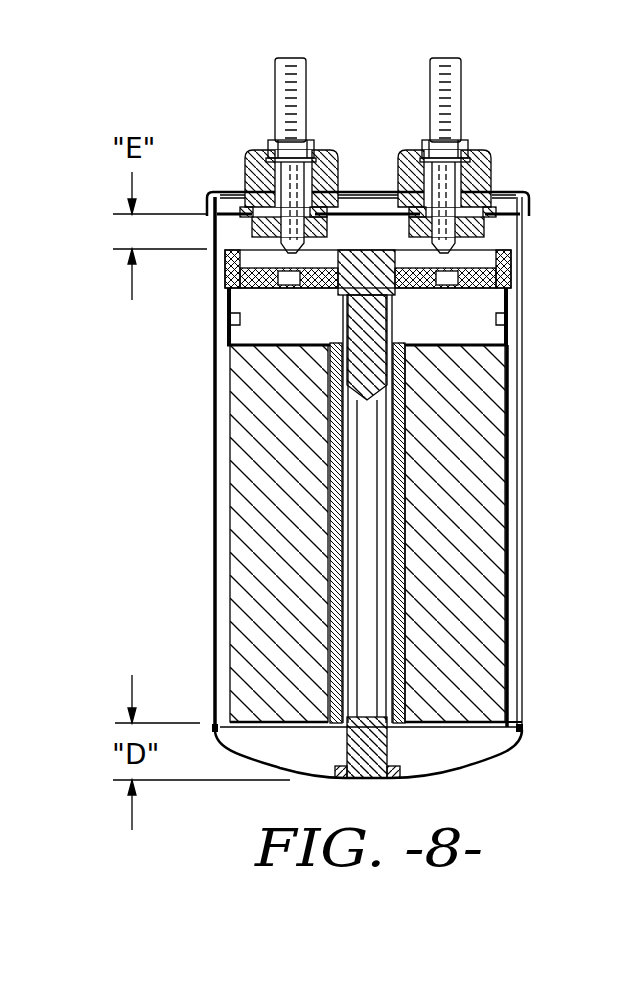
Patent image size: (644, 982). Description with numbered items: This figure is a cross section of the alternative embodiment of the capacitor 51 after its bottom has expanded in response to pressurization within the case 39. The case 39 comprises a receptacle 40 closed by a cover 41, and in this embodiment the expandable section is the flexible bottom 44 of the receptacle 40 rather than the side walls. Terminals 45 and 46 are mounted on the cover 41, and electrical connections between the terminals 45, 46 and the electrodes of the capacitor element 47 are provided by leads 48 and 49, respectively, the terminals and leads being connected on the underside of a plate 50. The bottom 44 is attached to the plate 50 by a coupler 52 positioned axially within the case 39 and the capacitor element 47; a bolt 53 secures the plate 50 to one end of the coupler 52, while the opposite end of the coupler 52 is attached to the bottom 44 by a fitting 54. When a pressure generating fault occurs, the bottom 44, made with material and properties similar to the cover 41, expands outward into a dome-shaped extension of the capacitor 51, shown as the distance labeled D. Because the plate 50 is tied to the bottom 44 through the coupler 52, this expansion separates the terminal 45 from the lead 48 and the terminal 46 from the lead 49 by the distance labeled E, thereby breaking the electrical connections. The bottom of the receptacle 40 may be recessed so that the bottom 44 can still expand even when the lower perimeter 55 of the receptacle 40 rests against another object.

The case 39 is at (522, 413).
The receptacle 40 is at (520, 548).
The cover 41 is at (503, 200).
The flexible bottom 44 is at (417, 782).
The terminal 45 is at (264, 141).
The terminal 46 is at (474, 141).
The capacitor element 47 is at (483, 448).
The lead 48 is at (222, 330).
The lead 49 is at (508, 297).
The plate 50 is at (510, 272).
The capacitor 51 is at (522, 593).
The coupler 52 is at (367, 552).
The bolt 53 is at (375, 253).
The fitting 54 is at (375, 742).
The lower perimeter 55 is at (522, 727).